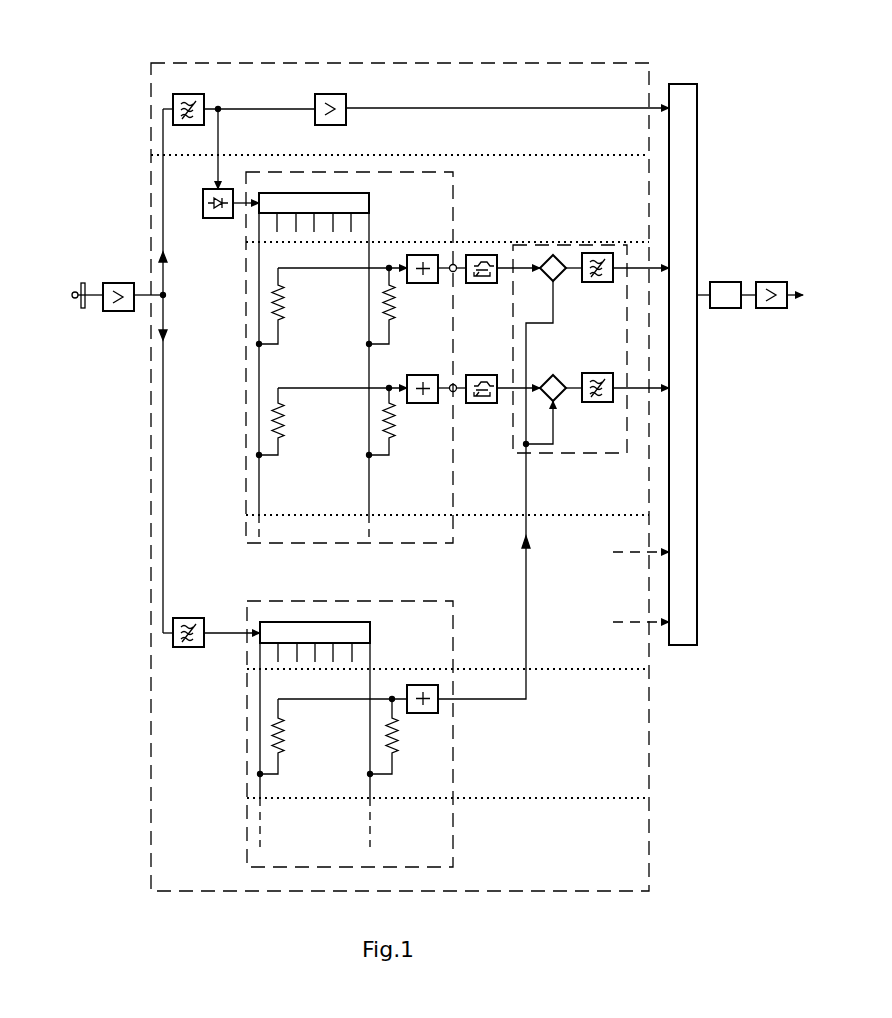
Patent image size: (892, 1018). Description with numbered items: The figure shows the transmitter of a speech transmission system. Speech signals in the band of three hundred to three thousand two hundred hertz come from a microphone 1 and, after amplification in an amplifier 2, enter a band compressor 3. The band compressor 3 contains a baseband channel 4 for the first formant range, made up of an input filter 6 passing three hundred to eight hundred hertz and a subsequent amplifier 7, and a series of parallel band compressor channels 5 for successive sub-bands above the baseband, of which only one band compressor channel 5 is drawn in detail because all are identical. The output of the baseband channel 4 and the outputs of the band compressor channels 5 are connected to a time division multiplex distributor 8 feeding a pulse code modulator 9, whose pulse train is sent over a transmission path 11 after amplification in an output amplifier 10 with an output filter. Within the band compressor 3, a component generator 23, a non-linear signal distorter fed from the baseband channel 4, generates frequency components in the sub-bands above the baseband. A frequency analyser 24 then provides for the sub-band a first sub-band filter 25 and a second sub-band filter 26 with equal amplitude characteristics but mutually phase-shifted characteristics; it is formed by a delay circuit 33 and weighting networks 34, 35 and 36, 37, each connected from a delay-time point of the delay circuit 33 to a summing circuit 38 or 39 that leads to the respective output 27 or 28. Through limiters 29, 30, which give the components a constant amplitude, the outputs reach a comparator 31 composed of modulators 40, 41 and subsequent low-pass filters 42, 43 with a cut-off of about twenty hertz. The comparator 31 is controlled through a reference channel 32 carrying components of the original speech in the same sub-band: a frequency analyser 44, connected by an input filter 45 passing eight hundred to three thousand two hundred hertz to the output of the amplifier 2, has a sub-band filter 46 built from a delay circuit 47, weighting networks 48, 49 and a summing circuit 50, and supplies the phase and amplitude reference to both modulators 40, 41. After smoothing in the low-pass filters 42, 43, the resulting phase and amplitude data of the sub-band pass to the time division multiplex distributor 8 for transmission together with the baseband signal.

The microphone 1 is at (84, 283).
The amplifier 2 is at (120, 283).
The band compressor 3 is at (612, 62).
The baseband channel 4 is at (493, 80).
The band compressor channel 5 is at (571, 520).
The input filter 6 is at (202, 95).
The amplifier 7 is at (344, 95).
The time division multiplex distributor 8 is at (700, 105).
The pulse code modulator 9 is at (724, 282).
The output amplifier 10 is at (767, 282).
The transmission path 11 is at (798, 290).
The component generator 23 is at (203, 212).
The frequency analyser 24 is at (455, 202).
The first sub-band filter 25 is at (336, 322).
The second sub-band filter 26 is at (336, 437).
The output 27 is at (454, 264).
The output 28 is at (457, 392).
The limiter 29 is at (492, 255).
The limiter 30 is at (490, 375).
The comparator 31 is at (603, 454).
The reference channel 32 is at (578, 654).
The delay circuit 33 is at (369, 200).
The weighting network 34 is at (282, 330).
The weighting network 35 is at (393, 303).
The weighting network 36 is at (285, 442).
The weighting network 37 is at (393, 440).
The summing circuit 38 is at (420, 255).
The summing circuit 39 is at (421, 375).
The modulator 40 is at (556, 255).
The modulator 41 is at (553, 375).
The low-pass filter 42 is at (598, 253).
The low-pass filter 43 is at (598, 373).
The frequency analyser 44 is at (455, 610).
The input filter 45 is at (197, 618).
The sub-band filter 46 is at (335, 740).
The delay circuit 47 is at (376, 636).
The weighting network 48 is at (286, 744).
The weighting network 49 is at (398, 744).
The summing circuit 50 is at (416, 685).